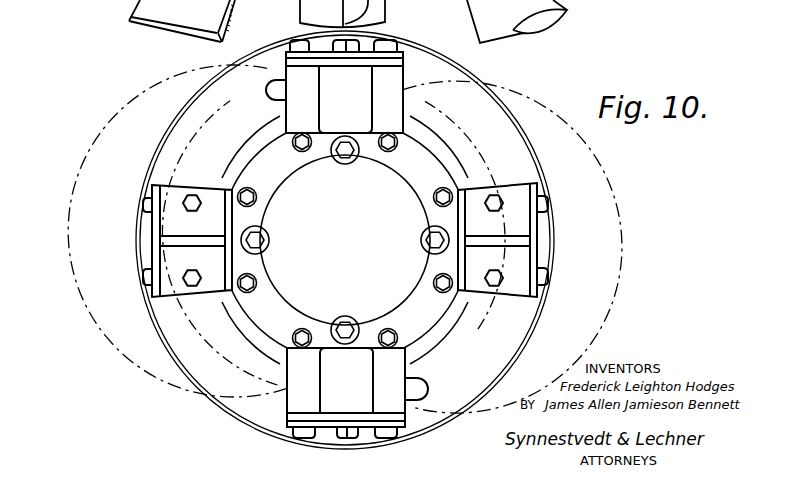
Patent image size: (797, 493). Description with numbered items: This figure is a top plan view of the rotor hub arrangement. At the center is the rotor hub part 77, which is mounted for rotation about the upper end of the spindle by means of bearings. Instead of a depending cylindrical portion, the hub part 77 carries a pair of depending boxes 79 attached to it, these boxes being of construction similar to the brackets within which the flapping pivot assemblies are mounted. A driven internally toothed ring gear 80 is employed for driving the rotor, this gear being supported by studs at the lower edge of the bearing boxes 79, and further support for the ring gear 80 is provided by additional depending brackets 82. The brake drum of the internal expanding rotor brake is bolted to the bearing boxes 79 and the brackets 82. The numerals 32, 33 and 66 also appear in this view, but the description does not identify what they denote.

The brake drum circle (left) 32 is at (96, 320).
The brake drum circle (right) 33 is at (620, 279).
The pipe 66 is at (300, 5).
The rotor hub part 77 is at (345, 240).
The depending boxes 79 is at (357, 95).
The ring gear 80 is at (545, 168).
The depending brackets 82 is at (148, 203).